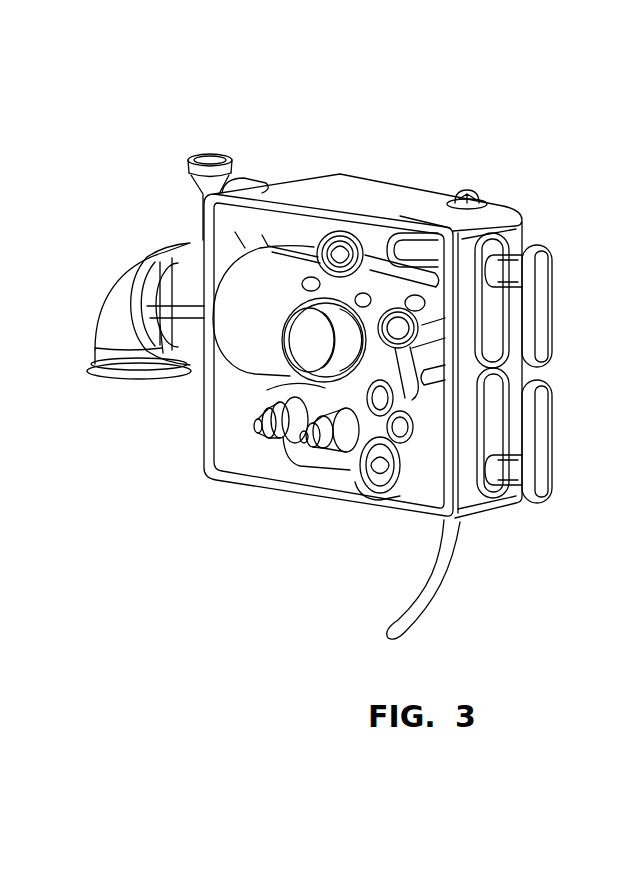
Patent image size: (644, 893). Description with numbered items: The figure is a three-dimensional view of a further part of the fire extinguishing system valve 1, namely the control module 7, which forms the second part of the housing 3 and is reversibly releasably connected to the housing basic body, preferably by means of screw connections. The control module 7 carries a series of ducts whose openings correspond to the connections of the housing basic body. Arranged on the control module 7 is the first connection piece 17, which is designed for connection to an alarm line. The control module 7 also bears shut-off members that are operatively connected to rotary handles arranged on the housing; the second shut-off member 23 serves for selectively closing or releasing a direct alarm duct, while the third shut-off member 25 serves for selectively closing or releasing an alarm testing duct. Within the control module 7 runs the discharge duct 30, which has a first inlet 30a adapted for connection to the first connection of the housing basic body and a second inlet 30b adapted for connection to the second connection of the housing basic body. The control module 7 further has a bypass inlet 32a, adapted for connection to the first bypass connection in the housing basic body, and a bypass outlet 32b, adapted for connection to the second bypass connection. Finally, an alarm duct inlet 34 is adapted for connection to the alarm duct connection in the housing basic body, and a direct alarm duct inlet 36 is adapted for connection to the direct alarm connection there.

The fire extinguishing system valve 1 is at (466, 152).
The housing 3 is at (206, 152).
The control module 7 is at (340, 194).
The first connection piece 17 is at (197, 176).
The second shut-off member 23 is at (547, 484).
The third shut-off member 25 is at (542, 278).
The discharge duct 30 is at (268, 291).
The first inlet 30a is at (307, 335).
The second inlet 30b is at (262, 249).
The bypass inlet 32a is at (410, 480).
The bypass outlet 32b is at (258, 371).
The alarm duct inlet 34 is at (345, 445).
The direct alarm duct inlet 36 is at (373, 507).